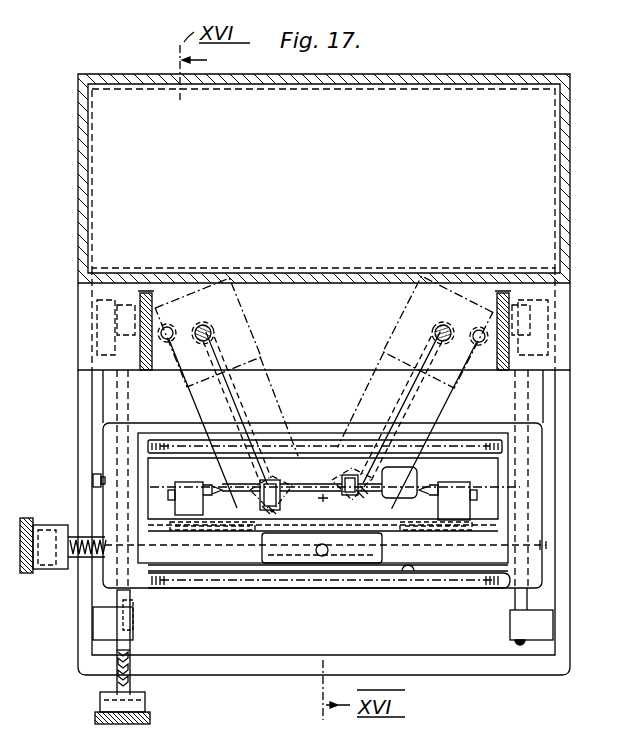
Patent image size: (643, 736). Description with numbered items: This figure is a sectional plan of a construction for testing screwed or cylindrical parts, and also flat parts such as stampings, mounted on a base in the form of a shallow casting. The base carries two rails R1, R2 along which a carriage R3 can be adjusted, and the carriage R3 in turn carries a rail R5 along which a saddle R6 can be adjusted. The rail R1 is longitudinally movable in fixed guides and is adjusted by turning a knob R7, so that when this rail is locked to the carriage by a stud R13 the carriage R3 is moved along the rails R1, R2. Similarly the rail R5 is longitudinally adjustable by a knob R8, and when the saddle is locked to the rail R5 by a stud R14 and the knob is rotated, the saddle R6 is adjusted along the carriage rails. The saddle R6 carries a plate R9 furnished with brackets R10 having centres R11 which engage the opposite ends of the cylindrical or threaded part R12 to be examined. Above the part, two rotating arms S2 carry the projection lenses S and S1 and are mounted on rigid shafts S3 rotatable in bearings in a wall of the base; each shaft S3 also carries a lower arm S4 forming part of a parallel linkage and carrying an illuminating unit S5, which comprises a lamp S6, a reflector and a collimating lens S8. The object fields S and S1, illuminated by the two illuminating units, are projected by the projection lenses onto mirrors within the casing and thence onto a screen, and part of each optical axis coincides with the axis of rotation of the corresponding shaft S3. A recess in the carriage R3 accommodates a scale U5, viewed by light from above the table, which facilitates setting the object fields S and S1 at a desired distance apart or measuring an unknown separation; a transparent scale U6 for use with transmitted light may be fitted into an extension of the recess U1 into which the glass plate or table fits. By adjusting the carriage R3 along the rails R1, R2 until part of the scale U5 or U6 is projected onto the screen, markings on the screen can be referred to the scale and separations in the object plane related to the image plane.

The projection lens S is at (335, 477).
The projection lens S1 is at (343, 470).
The rotating arm S2 is at (253, 336).
The rigid shaft S3 is at (207, 327).
The lower arm S4 is at (236, 400).
The illuminating unit S5 is at (368, 494).
The lamp S6 is at (412, 477).
The collimating lens S8 is at (262, 502).
The rail R1 is at (117, 598).
The rail R2 is at (527, 602).
The carriage R3 is at (542, 508).
The rail R5 is at (548, 545).
The saddle R6 is at (297, 542).
The knob R7 is at (152, 718).
The knob R8 is at (52, 571).
The plate R9 is at (250, 532).
The bracket R10 is at (468, 512).
The centre R11 is at (203, 490).
The cylindrical or threaded part R12 is at (324, 500).
The stud R13 is at (93, 476).
The stud R14 is at (323, 557).
The recess U1 is at (408, 572).
The scale U5 is at (430, 579).
The transparent scale U6 is at (472, 448).